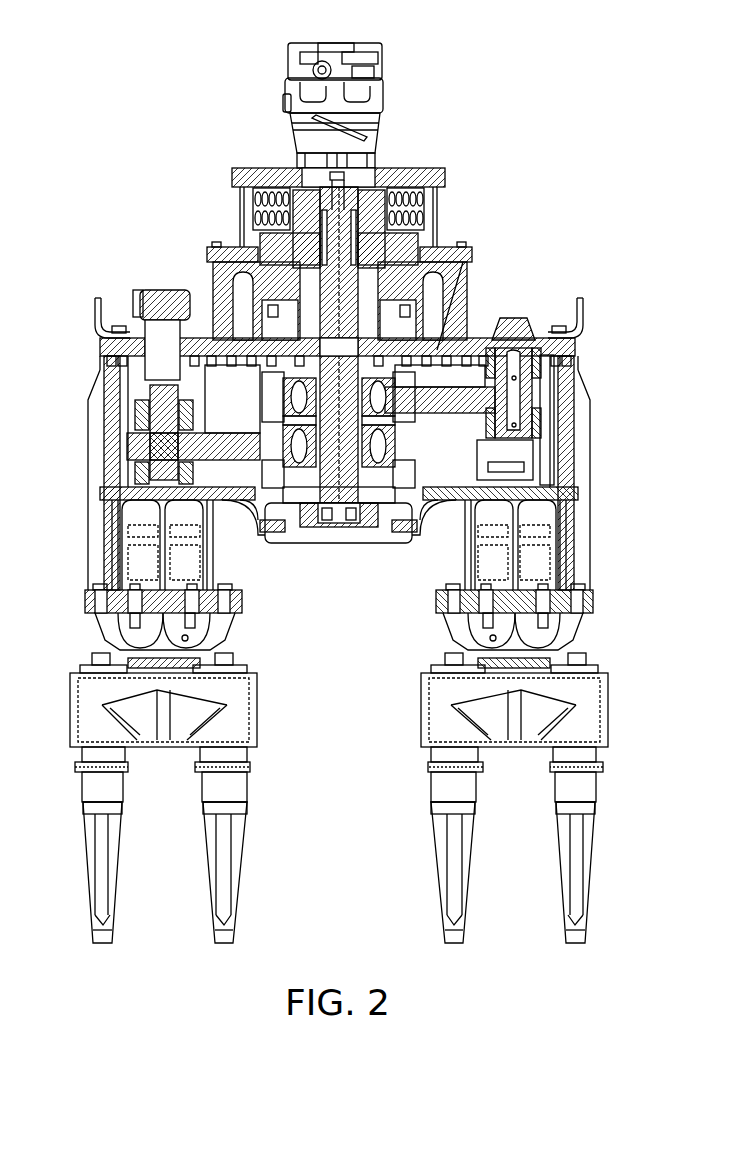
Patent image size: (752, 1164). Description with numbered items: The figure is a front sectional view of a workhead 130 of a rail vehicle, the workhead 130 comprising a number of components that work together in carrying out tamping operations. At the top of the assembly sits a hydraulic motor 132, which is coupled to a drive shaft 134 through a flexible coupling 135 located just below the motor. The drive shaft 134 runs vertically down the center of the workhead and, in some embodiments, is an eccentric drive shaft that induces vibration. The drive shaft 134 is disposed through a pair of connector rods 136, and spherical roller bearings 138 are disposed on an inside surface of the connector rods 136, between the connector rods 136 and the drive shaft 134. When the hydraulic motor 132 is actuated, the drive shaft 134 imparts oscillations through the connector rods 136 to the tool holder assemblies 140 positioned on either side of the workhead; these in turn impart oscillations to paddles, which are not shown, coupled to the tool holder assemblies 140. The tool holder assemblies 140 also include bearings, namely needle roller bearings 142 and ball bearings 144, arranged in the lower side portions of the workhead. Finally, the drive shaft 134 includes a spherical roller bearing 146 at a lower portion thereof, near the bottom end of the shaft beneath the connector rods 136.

The workhead 130 is at (151, 72).
The hydraulic motor 132 is at (383, 142).
The drive shaft 134 is at (350, 485).
The flexible coupling 135 is at (378, 197).
The connector rods 136 is at (437, 393).
The spherical roller bearings 138 is at (310, 413).
The tool holder assemblies 140 is at (538, 558).
The needle roller bearings 142 is at (202, 576).
The ball bearings 144 is at (135, 547).
The spherical roller bearing 146 is at (318, 490).